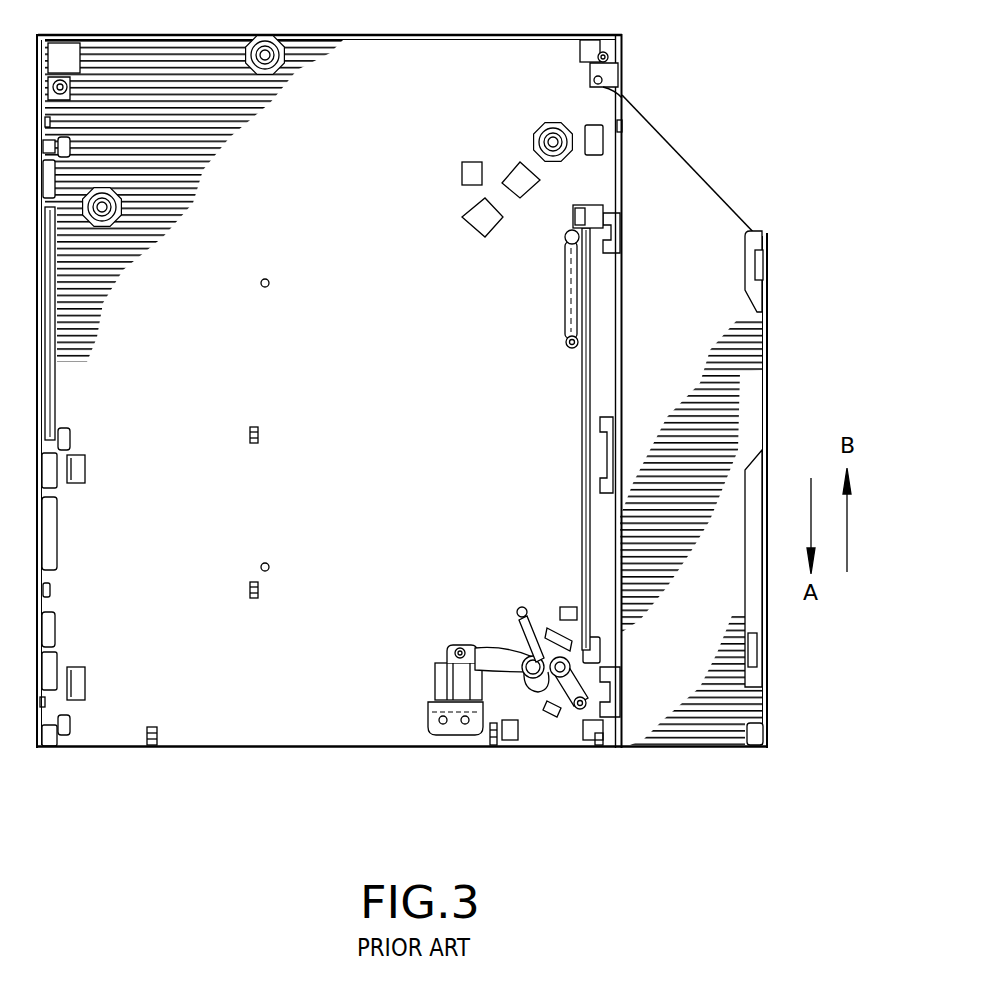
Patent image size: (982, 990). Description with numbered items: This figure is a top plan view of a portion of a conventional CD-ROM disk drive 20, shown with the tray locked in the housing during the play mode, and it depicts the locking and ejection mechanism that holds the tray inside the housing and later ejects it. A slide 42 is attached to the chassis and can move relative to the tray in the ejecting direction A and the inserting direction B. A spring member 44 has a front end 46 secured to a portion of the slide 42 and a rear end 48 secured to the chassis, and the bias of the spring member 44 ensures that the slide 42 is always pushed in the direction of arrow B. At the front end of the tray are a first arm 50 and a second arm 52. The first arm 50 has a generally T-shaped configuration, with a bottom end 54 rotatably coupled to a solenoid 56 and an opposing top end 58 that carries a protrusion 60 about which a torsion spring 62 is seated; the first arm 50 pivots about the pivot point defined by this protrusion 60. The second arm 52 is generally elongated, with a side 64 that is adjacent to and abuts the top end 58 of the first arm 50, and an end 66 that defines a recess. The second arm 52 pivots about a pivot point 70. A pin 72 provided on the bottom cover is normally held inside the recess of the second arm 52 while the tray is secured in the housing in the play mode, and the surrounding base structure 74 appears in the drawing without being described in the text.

The CD-ROM disk drive 20 is at (714, 50).
The slide 42 is at (590, 385).
The spring member 44 is at (548, 289).
The front end 46 is at (566, 342).
The rear end 48 is at (565, 237).
The first arm 50 is at (505, 664).
The second arm 52 is at (523, 606).
The bottom end 54 is at (460, 648).
The solenoid 56 is at (445, 722).
The top end 58 is at (538, 622).
The protrusion 60 is at (528, 662).
The torsion spring 62 is at (525, 682).
The side 64 is at (558, 641).
The end 66 is at (578, 704).
The pivot point 70 is at (568, 664).
The pin 72 is at (565, 712).
The base plate 74 is at (690, 710).